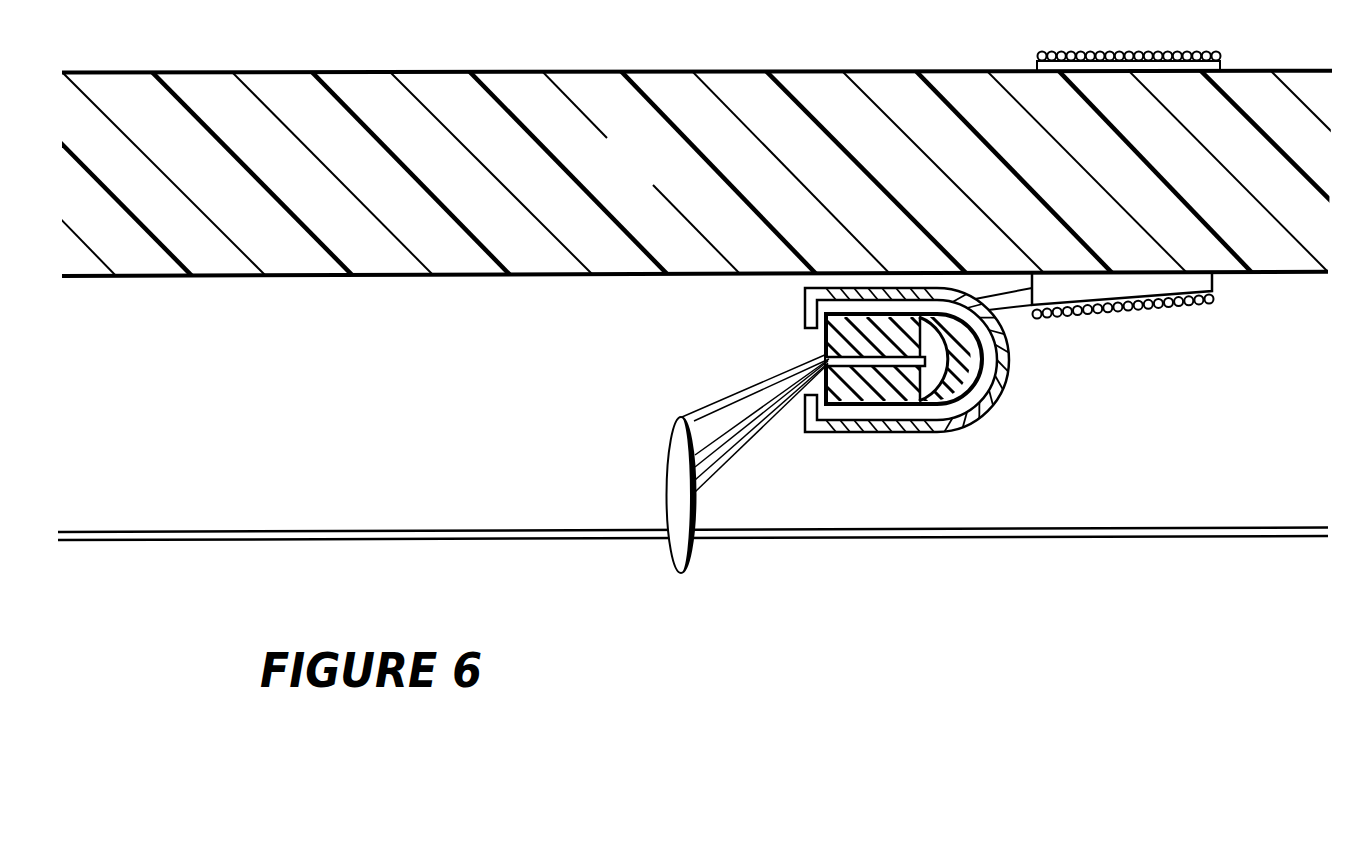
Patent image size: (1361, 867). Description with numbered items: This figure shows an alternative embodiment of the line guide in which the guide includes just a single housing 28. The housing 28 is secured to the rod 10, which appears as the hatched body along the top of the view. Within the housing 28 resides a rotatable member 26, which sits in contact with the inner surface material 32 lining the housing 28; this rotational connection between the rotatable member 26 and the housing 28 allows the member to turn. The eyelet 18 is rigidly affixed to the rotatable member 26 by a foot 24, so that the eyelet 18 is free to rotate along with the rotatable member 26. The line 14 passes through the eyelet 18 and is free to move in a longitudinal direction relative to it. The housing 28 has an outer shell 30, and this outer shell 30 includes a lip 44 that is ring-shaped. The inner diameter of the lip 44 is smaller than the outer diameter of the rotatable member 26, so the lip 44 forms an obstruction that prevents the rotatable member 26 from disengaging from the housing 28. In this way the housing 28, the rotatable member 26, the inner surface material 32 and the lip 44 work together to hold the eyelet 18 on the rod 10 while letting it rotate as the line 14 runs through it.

The rod 10 is at (650, 178).
The line 14 is at (1145, 536).
The eyelet 18 is at (686, 548).
The foot 24 is at (886, 355).
The rotatable member 26 is at (868, 390).
The housing 28 is at (977, 417).
The outer shell 30 is at (1003, 380).
The inner surface material 32 is at (928, 415).
The lip 44 is at (805, 303).